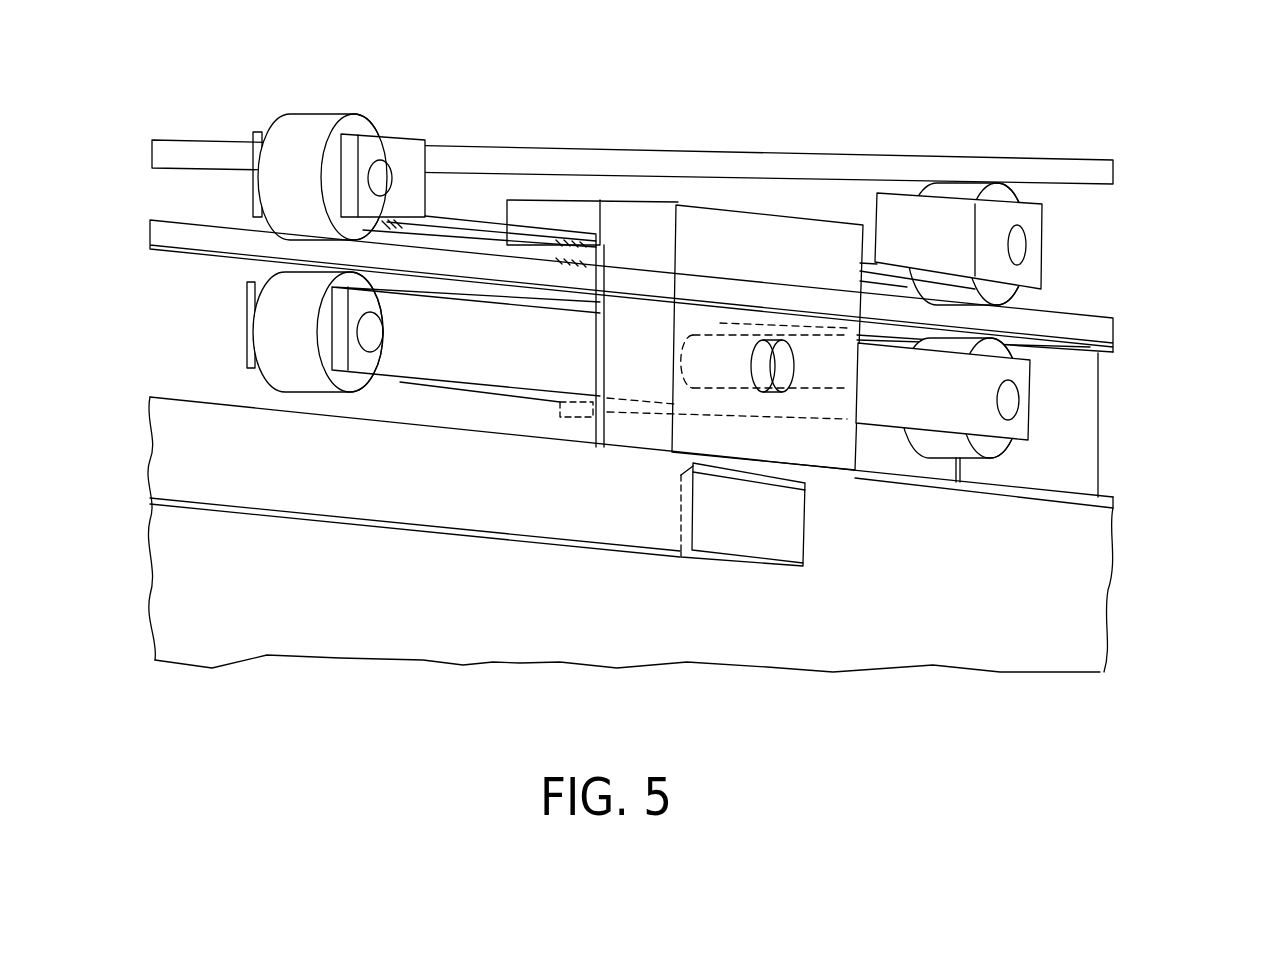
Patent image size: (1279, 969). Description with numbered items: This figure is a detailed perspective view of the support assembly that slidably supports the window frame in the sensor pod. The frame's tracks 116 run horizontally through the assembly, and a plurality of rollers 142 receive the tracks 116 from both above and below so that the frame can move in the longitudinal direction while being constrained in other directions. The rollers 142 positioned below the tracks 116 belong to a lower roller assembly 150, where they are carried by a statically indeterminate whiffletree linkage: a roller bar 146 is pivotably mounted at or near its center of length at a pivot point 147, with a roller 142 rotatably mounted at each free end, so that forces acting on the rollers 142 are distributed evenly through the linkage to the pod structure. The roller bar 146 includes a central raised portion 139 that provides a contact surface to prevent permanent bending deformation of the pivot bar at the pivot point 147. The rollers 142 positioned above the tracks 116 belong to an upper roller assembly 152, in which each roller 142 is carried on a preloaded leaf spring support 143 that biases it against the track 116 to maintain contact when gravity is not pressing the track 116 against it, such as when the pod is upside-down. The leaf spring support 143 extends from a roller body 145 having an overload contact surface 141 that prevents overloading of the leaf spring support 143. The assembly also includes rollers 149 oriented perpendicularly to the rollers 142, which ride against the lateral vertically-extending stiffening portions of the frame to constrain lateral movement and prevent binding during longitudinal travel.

The track 116 is at (1092, 333).
The central raised portion 139 is at (592, 296).
The overload contact surface 141 is at (590, 243).
The roller 142 is at (323, 122).
The leaf spring support 143 is at (468, 218).
The roller body 145 is at (713, 233).
The roller bar 146 is at (477, 357).
The pivot point 147 is at (785, 363).
The roller 149 is at (770, 528).
The lower roller assembly 150 is at (1072, 411).
The upper roller assembly 152 is at (1093, 243).